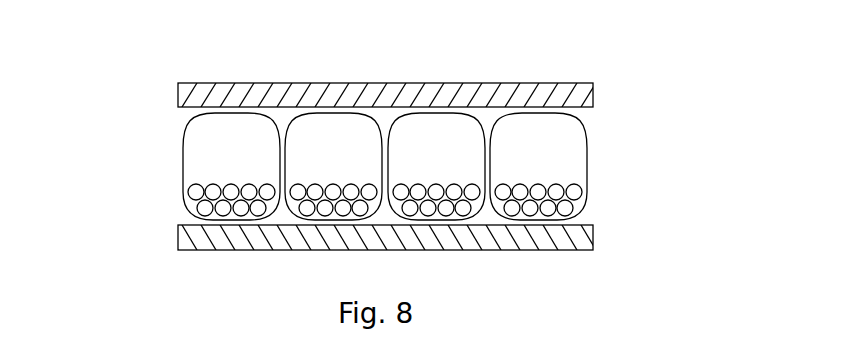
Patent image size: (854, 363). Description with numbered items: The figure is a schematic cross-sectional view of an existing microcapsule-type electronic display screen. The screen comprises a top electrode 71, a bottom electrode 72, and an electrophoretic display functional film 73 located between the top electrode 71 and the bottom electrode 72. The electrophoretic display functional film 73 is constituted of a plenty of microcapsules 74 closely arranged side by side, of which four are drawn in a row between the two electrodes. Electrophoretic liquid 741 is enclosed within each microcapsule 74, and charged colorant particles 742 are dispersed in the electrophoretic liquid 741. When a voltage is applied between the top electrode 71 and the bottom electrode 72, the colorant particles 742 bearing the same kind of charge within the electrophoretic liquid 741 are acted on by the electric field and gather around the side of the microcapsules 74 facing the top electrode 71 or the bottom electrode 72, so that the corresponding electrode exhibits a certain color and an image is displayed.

The top electrode 71 is at (588, 87).
The bottom electrode 72 is at (582, 240).
The electrophoretic display functional film 73 is at (147, 127).
The microcapsule 74 is at (393, 166).
The electrophoretic liquid 741 is at (205, 168).
The charged colorant particles 742 is at (583, 190).